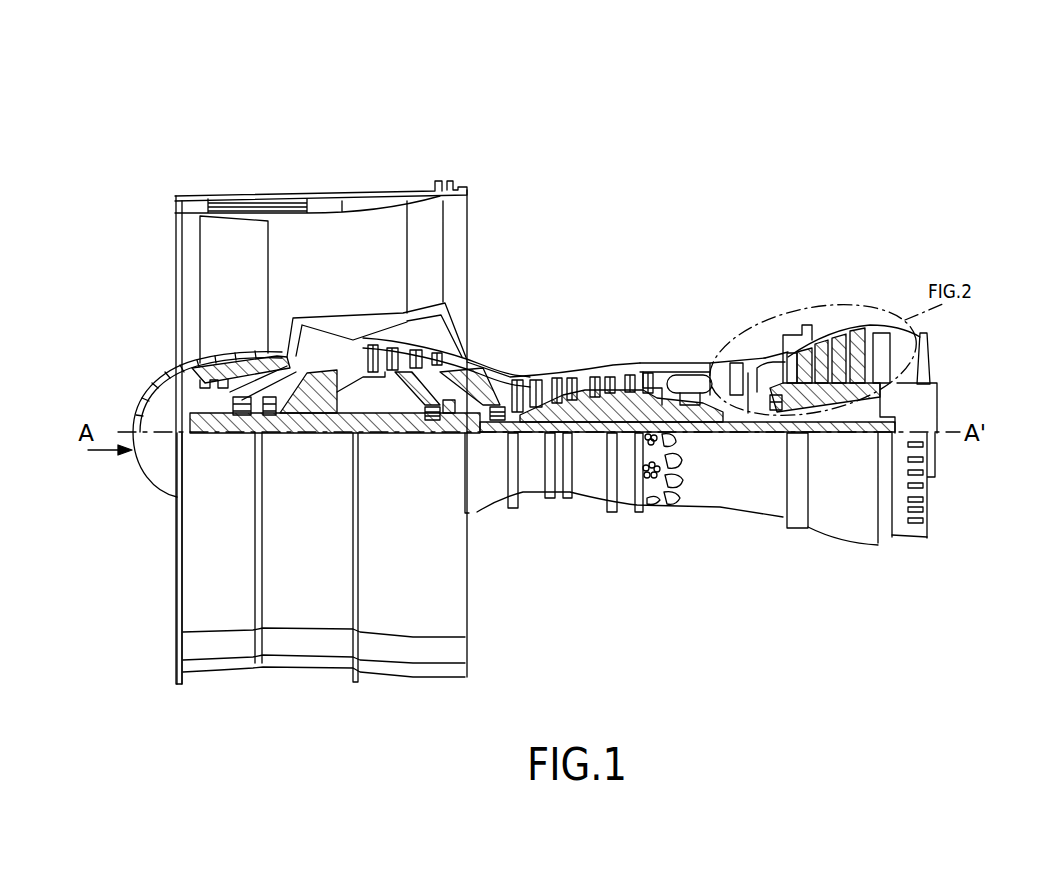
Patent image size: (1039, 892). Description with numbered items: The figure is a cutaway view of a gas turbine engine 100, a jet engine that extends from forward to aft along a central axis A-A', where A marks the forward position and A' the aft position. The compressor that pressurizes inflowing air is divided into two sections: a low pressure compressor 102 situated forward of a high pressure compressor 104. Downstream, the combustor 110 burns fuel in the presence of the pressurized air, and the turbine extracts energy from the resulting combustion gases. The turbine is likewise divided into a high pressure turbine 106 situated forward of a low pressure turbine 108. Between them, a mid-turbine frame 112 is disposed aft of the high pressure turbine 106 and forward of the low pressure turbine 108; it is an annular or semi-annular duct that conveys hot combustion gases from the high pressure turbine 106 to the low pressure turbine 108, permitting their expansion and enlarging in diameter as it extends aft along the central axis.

The gas turbine engine 100 is at (535, 385).
The low pressure compressor 102 is at (467, 188).
The high pressure compressor 104 is at (640, 363).
The high pressure turbine 106 is at (757, 350).
The low pressure turbine 108 is at (883, 320).
The combustor 110 is at (710, 362).
The mid-turbine frame 112 is at (797, 330).